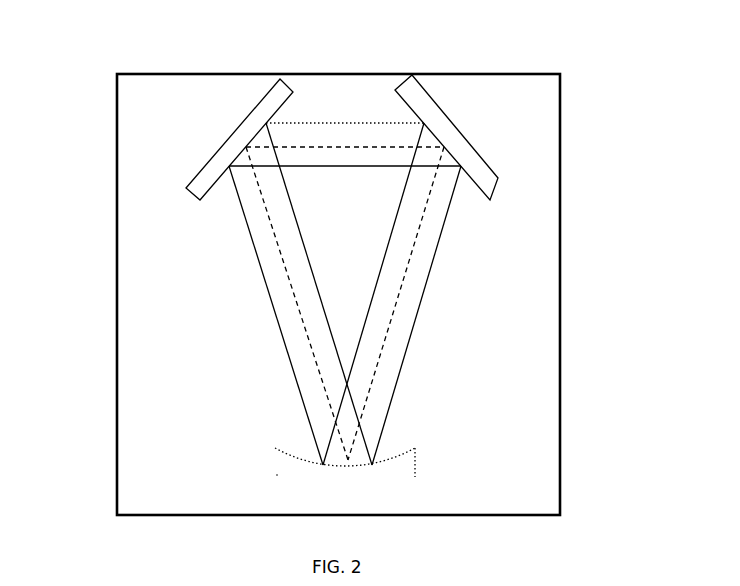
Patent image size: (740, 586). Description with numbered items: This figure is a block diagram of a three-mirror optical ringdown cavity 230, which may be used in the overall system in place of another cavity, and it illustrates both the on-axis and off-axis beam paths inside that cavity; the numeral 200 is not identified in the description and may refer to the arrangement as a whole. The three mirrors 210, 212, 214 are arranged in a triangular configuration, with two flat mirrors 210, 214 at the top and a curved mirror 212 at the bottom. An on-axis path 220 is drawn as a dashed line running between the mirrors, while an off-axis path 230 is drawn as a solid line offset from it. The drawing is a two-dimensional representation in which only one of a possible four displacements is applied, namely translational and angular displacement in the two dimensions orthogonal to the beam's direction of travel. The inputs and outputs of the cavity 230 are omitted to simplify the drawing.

The optical system 200 is at (600, 62).
The mirror 210 is at (237, 130).
The mirror 214 is at (458, 155).
The mirror 212 is at (275, 465).
The on-axis path 220 is at (377, 352).
The three-mirror optical ringdown cavity 230 is at (117, 202).